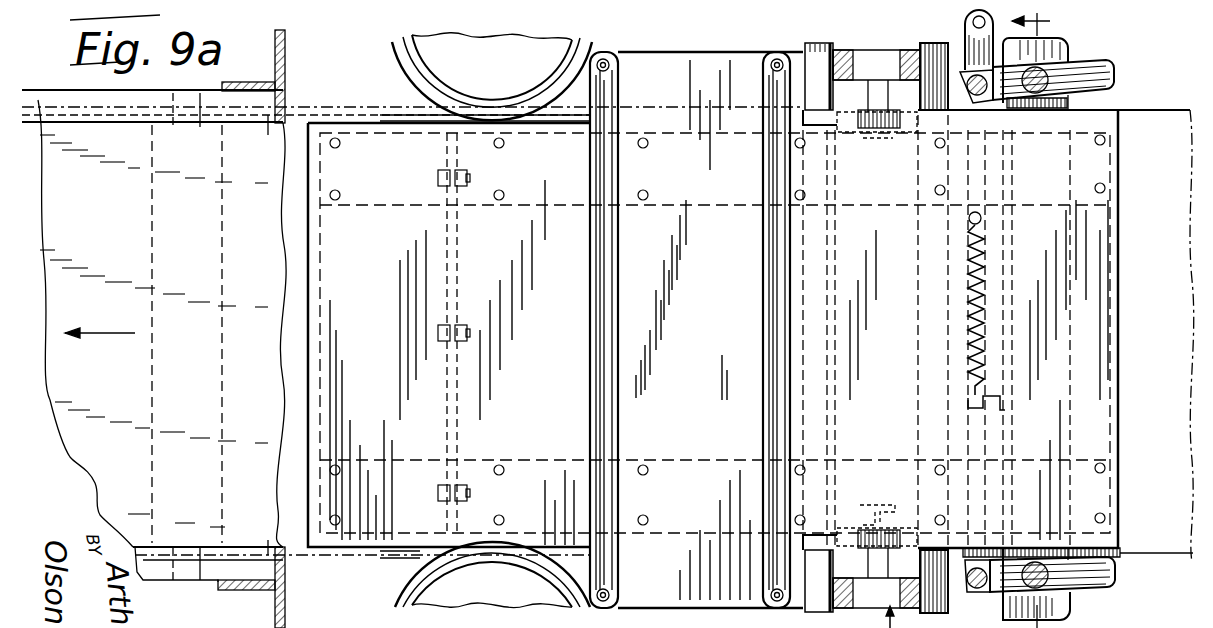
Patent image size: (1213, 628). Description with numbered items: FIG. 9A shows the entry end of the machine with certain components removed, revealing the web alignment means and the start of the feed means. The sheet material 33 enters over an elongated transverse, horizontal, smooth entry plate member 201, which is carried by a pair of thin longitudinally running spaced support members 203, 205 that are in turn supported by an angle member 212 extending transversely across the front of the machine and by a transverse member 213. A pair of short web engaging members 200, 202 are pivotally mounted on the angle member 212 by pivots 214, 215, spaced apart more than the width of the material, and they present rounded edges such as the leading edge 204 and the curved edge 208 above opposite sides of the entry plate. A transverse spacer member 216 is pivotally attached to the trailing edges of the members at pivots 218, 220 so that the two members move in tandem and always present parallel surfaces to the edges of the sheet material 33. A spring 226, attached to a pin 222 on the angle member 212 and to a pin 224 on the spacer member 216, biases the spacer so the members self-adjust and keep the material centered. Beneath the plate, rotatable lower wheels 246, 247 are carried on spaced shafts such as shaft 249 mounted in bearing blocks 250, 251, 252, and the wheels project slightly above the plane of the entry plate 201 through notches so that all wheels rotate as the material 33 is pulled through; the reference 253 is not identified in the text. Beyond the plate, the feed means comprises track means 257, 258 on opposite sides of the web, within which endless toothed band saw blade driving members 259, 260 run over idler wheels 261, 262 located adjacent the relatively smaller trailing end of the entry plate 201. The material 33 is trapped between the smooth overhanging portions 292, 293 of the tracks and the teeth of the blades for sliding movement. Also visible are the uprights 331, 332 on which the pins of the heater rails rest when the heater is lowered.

The sheet material 33 is at (275, 325).
The web engaging member 200 is at (1118, 575).
The entry plate member 201 is at (322, 250).
The web engaging member 202 is at (1116, 72).
The support member 203 is at (683, 470).
The rounded leading edge 204 is at (1112, 96).
The support member 205 is at (703, 208).
The rounded leading edge 208 is at (1120, 552).
The angle member 212 is at (1072, 607).
The transverse member 213 is at (478, 409).
The pivot 214 is at (1082, 66).
The pivot 215 is at (1028, 592).
The transverse spacer member 216 is at (967, 30).
The pivot 218 is at (972, 598).
The pivot 220 is at (984, 96).
The pin 222 is at (1000, 398).
The pin 224 is at (982, 218).
The spring 226 is at (980, 298).
The lower wheel 246 is at (877, 540).
The lower wheel 247 is at (868, 128).
The shaft 249 is at (838, 337).
The bearing block 250 is at (880, 606).
The bearing block 251 is at (860, 470).
The bearing block 252 is at (848, 42).
The frame bar 253 is at (895, 205).
The track means 257 is at (302, 80).
The track means 258 is at (298, 568).
The driving member 259 is at (306, 545).
The driving member 260 is at (330, 107).
The idler wheel 261 is at (445, 590).
The idler wheel 262 is at (400, 57).
The overhanging portion 292 is at (268, 540).
The overhanging portion 293 is at (268, 135).
The upright 331 is at (274, 613).
The upright 332 is at (274, 40).